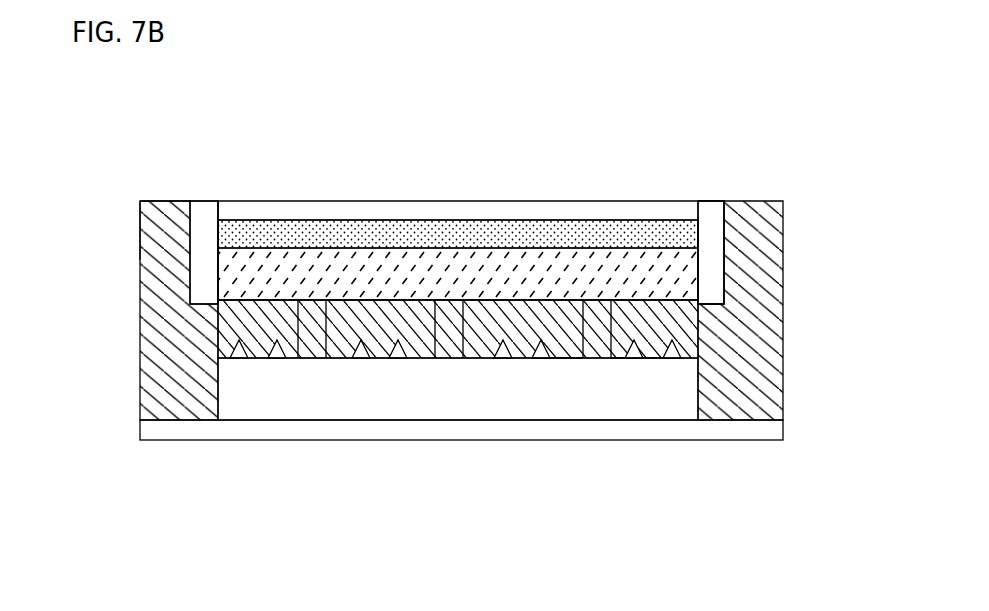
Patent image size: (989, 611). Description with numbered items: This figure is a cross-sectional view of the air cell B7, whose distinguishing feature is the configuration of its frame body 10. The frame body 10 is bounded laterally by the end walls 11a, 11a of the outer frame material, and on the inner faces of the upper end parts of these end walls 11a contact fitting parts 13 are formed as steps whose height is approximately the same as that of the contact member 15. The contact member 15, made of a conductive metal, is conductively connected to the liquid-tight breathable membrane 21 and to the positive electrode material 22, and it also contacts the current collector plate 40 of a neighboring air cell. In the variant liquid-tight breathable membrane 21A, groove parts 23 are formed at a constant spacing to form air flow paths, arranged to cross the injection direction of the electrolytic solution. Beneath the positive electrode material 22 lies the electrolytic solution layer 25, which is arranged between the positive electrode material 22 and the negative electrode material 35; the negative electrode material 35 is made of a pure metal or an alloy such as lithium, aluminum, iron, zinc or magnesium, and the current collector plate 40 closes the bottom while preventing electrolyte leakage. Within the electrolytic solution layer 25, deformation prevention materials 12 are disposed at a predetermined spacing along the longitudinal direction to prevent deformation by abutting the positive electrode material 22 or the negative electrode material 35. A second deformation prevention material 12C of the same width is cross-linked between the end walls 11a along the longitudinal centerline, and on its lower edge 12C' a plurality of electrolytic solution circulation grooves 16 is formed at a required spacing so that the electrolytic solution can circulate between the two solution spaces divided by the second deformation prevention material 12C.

The frame body 10 is at (783, 397).
The end wall 11a is at (139, 323).
The deformation prevention material 12 is at (313, 358).
The second deformation prevention material 12C is at (655, 455).
The lower edge 12C' is at (574, 455).
The contact fitting part 13 is at (186, 262).
The contact member 15 is at (706, 210).
The electrolytic solution circulation groove 16 is at (247, 358).
The liquid-tight breathable membrane 21 is at (521, 242).
The liquid-tight breathable membrane 21A is at (218, 201).
The positive electrode material 22 is at (688, 263).
The groove part 23 is at (285, 208).
The electrolytic solution layer 25 is at (683, 325).
The negative electrode material 35 is at (457, 411).
The current collector plate 40 is at (772, 440).
The air cell B7 is at (140, 201).